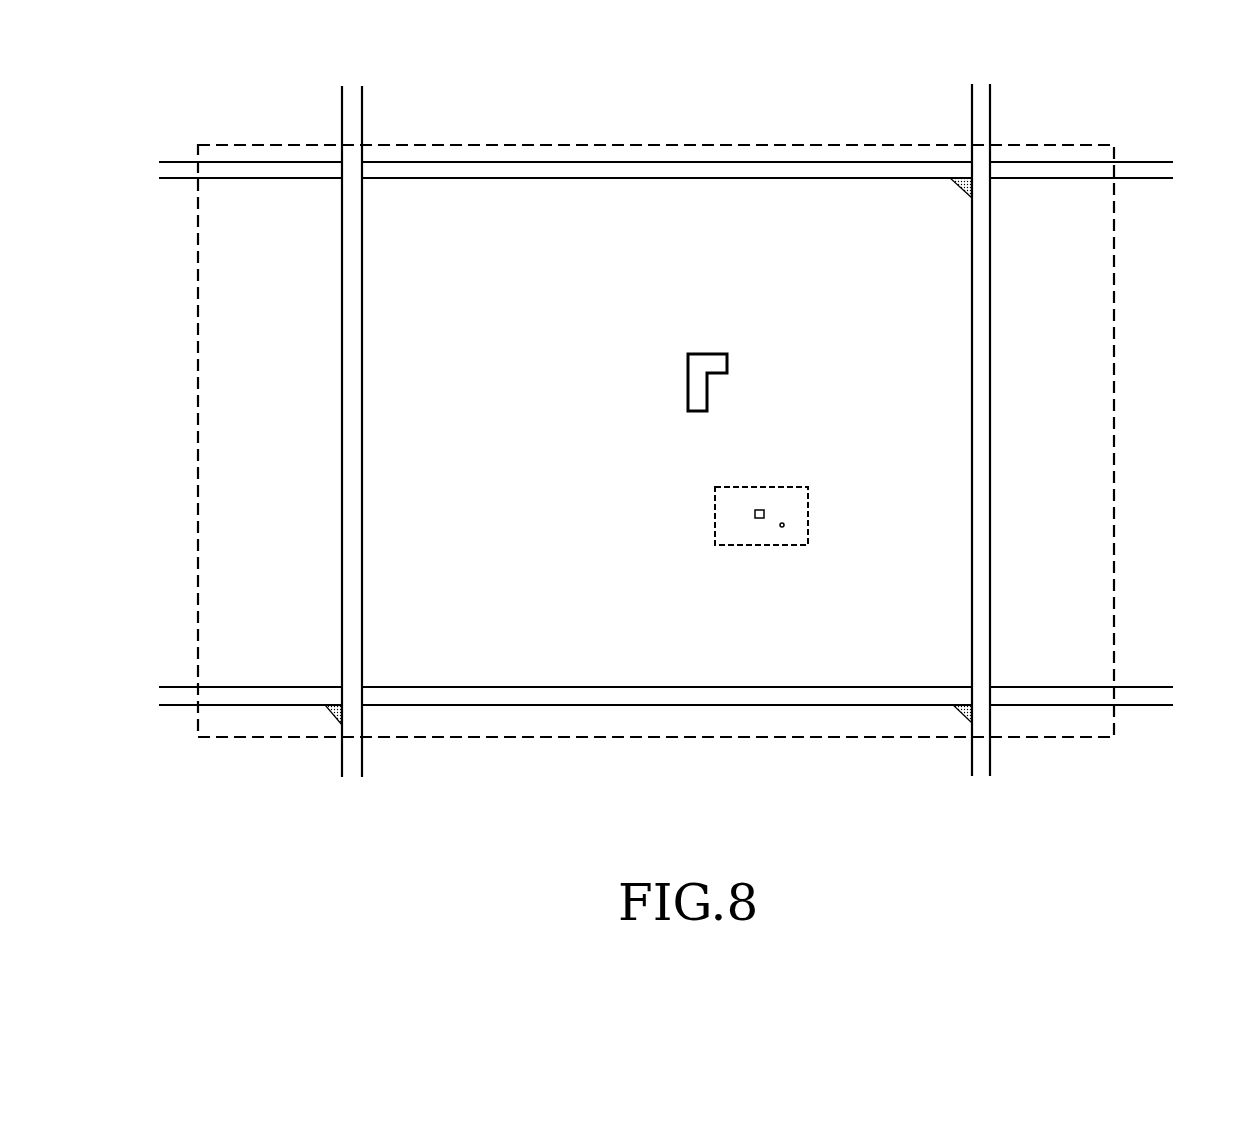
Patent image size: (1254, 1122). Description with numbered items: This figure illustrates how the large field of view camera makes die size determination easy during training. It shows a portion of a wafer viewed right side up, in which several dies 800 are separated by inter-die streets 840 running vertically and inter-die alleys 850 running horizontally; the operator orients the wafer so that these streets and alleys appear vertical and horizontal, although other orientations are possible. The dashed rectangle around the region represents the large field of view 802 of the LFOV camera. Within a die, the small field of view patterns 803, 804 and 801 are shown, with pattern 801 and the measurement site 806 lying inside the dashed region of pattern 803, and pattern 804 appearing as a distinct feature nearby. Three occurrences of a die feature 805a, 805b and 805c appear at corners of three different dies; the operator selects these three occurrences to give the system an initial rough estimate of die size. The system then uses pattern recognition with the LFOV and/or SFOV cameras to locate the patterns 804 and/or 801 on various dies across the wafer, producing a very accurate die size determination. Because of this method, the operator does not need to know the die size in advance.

The dies 800 is at (1043, 208).
The small field of view pattern 801 is at (762, 510).
The large field of view 802 is at (281, 147).
The small field of view pattern 803 is at (747, 545).
The small field of view pattern 804 is at (688, 362).
The die feature 805a is at (953, 180).
The die feature 805b is at (958, 710).
The die feature 805c is at (333, 718).
The measurement site 806 is at (782, 525).
The inter-die streets 840 is at (362, 746).
The inter-die alleys 850 is at (1145, 705).